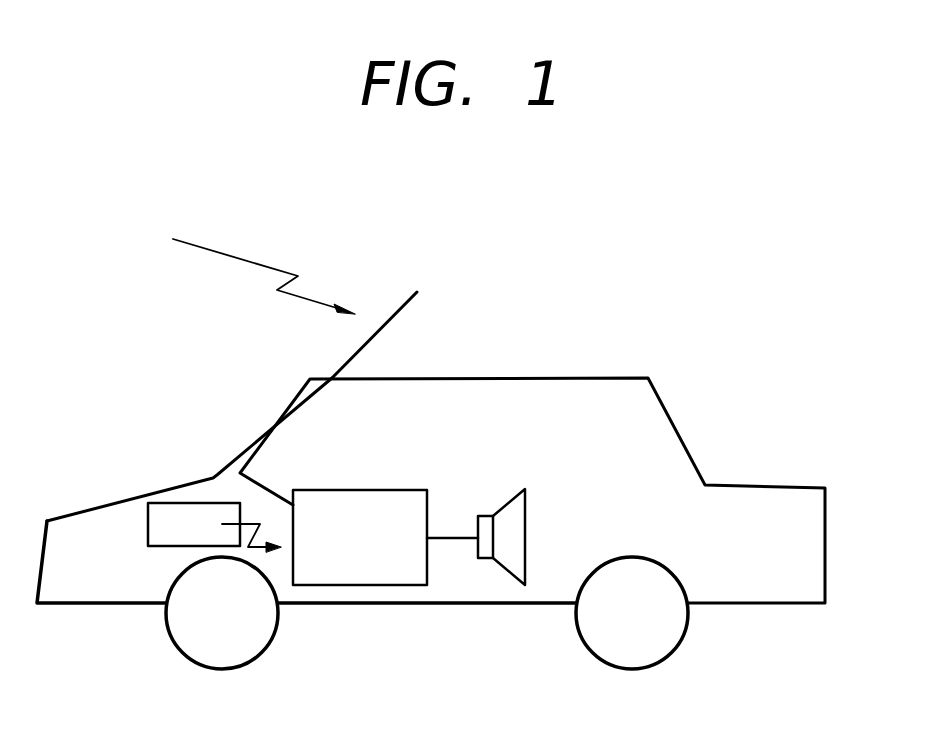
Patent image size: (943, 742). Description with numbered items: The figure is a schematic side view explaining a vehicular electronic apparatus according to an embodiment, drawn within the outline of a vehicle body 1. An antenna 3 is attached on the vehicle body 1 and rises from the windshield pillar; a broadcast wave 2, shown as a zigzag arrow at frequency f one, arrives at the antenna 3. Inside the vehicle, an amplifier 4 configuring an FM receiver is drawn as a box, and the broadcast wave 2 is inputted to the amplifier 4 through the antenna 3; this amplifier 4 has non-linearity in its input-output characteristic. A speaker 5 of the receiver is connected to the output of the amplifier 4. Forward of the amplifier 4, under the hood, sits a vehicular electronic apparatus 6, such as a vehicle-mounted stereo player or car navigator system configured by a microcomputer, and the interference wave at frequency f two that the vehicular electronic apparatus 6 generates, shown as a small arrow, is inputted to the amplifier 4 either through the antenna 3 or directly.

The vehicle body 1 is at (810, 533).
The broadcast wave 2 is at (213, 250).
The antenna 3 is at (405, 298).
The amplifier 4 is at (387, 505).
The speaker 5 is at (518, 528).
The vehicular electronic apparatus 6 is at (177, 512).